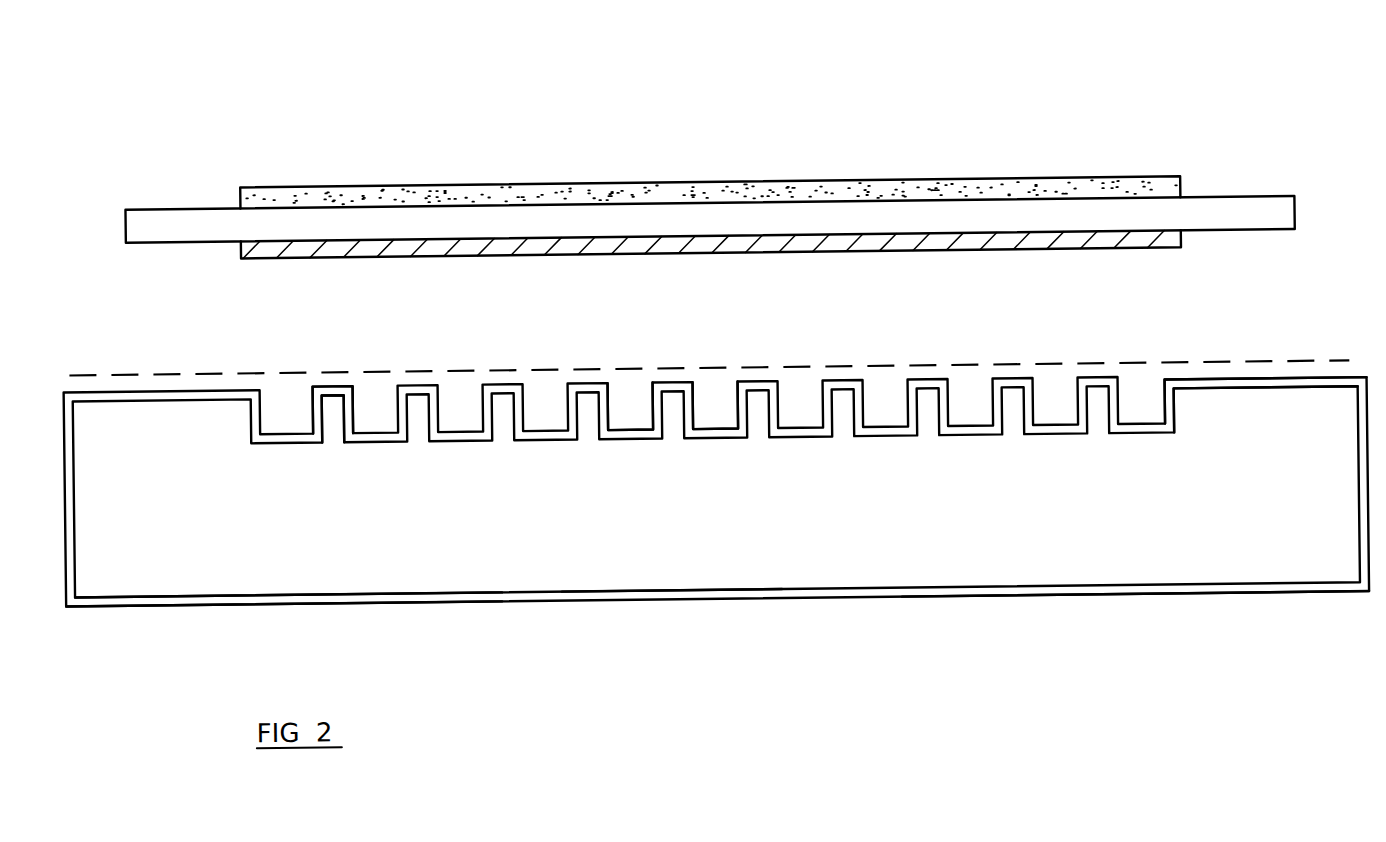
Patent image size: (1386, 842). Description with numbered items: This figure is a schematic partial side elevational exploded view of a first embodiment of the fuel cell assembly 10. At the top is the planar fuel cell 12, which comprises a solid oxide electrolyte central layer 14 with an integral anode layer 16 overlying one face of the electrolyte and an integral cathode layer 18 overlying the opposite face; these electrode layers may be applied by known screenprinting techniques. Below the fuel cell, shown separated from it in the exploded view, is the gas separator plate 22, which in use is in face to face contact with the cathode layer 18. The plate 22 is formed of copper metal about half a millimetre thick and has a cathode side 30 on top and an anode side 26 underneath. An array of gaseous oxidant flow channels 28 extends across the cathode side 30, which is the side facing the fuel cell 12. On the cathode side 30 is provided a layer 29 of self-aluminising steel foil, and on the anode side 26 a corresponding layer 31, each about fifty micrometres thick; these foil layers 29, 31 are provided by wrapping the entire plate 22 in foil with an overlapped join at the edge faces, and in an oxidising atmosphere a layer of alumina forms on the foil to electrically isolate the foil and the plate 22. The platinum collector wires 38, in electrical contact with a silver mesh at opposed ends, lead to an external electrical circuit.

The fuel cell assembly 10 is at (823, 650).
The planar fuel cell 12 is at (200, 106).
The solid oxide electrolyte central layer 14 is at (175, 212).
The anode layer 16 is at (397, 182).
The cathode layer 18 is at (521, 240).
The gas separator plate 22 is at (430, 564).
The anode side 26 is at (663, 590).
The gaseous oxidant flow channels 28 is at (714, 411).
The foil layer on cathode side 29 is at (330, 382).
The cathode side 30 is at (1275, 392).
The foil layer on anode side 31 is at (1020, 596).
The platinum collector wires 38 is at (168, 368).